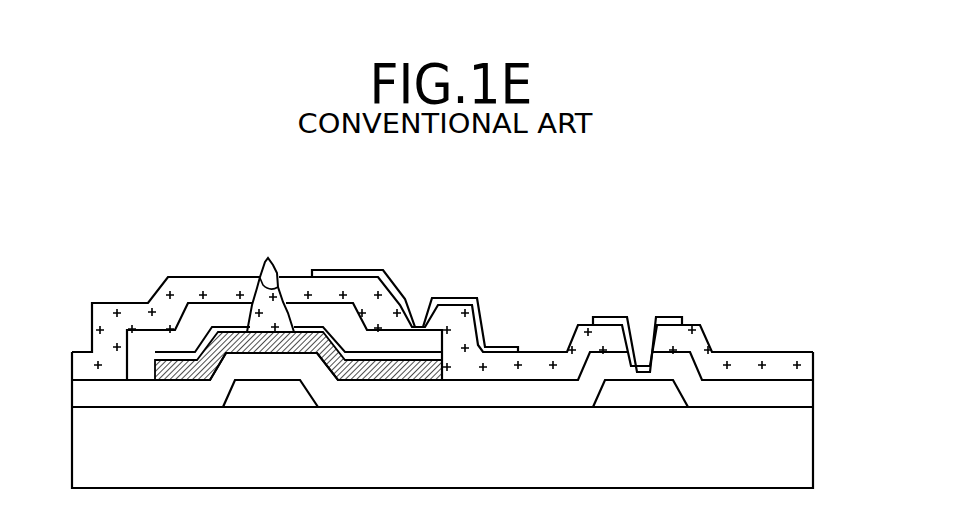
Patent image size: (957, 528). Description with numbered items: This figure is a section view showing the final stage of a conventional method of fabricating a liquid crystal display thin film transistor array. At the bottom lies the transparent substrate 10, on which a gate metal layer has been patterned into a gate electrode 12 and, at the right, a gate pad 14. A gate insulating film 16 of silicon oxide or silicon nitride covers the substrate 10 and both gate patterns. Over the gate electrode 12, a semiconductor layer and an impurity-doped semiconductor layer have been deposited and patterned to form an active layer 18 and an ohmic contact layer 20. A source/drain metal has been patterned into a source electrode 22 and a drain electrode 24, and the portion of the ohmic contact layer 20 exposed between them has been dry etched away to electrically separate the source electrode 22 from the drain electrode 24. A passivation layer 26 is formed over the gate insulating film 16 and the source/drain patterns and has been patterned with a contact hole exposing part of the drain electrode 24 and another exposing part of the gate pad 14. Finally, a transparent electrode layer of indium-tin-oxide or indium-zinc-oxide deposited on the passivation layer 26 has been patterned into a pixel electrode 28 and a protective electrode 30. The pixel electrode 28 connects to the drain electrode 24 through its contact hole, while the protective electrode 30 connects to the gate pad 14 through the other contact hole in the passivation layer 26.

The transparent substrate 10 is at (813, 457).
The gate electrode 12 is at (267, 402).
The gate pad 14 is at (638, 402).
The gate insulating film 16 is at (813, 393).
The active layer 18 is at (360, 373).
The ohmic contact layer 20 is at (270, 281).
The source electrode 22 is at (204, 320).
The drain electrode 24 is at (348, 303).
The passivation layer 26 is at (814, 362).
The pixel electrode 28 is at (462, 298).
The protective electrode 30 is at (615, 317).